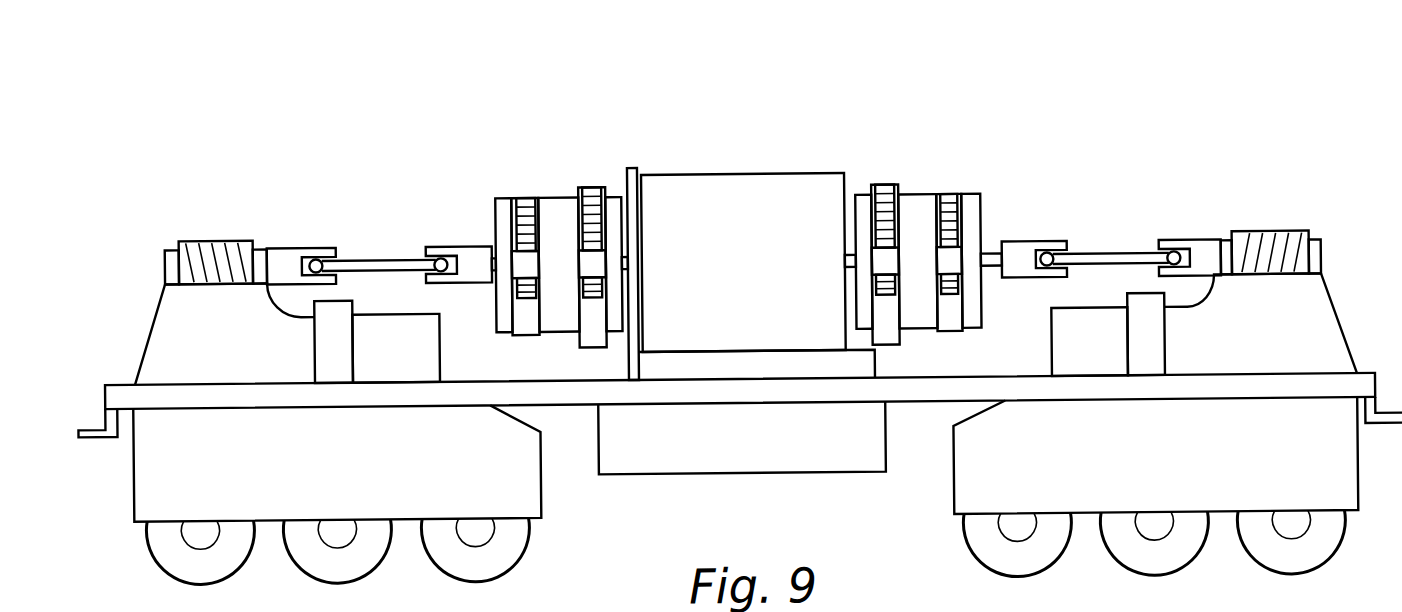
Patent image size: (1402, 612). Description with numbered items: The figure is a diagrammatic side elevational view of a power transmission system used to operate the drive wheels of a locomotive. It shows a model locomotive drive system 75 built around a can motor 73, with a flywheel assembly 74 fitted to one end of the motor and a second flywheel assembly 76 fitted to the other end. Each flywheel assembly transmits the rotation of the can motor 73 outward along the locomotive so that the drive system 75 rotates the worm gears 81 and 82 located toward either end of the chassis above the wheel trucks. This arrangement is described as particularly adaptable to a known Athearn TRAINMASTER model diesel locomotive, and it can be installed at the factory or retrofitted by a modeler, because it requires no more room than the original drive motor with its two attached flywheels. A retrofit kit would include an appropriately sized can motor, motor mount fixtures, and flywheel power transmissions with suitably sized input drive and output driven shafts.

The can motor 73 is at (741, 190).
The flywheel assembly 74 is at (1000, 190).
The model locomotive drive system 75 is at (617, 116).
The flywheel assembly 76 is at (477, 204).
The worm gear 81 is at (1272, 243).
The worm gear 82 is at (212, 245).